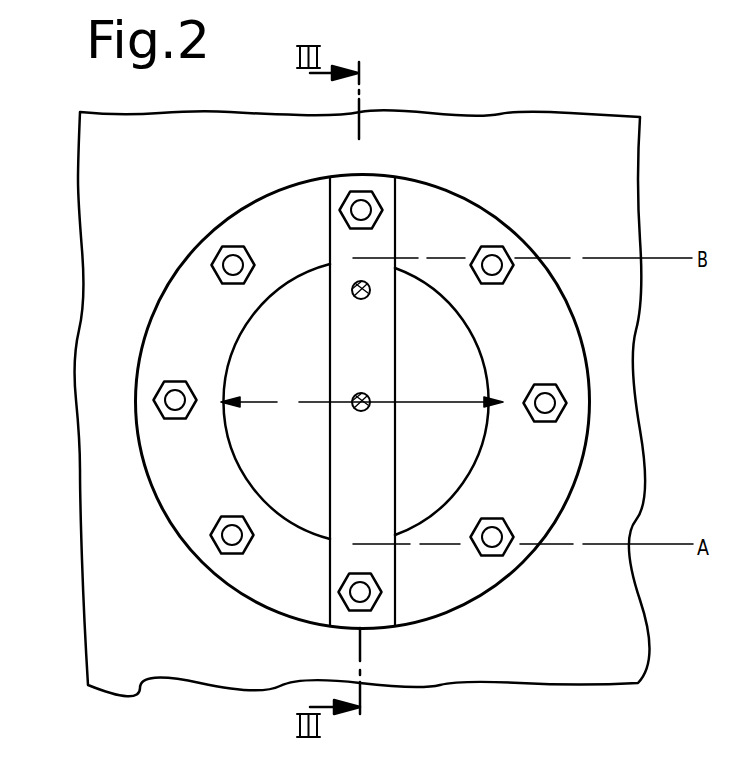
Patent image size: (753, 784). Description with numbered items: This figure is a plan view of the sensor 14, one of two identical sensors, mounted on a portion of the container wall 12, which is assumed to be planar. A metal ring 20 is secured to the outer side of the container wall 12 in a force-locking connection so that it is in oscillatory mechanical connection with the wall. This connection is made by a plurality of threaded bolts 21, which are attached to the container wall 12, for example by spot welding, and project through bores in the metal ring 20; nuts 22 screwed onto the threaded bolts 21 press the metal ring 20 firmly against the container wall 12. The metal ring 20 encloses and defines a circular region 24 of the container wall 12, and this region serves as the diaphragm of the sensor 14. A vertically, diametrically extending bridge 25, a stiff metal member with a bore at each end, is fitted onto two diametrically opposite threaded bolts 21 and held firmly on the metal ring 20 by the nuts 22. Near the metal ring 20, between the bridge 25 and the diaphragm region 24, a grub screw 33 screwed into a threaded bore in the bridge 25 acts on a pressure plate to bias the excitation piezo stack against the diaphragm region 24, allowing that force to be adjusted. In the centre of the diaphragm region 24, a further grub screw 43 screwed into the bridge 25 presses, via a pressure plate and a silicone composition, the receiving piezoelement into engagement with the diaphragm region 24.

The container wall 12 is at (88, 178).
The sensor 14 is at (133, 338).
The metal ring 20 is at (162, 469).
The threaded bolts 21 is at (371, 203).
The nuts 22 is at (347, 195).
The circular region 24 is at (451, 348).
The bridge 25 is at (388, 463).
The grub screw 33 is at (353, 292).
The grub screw 43 is at (354, 410).